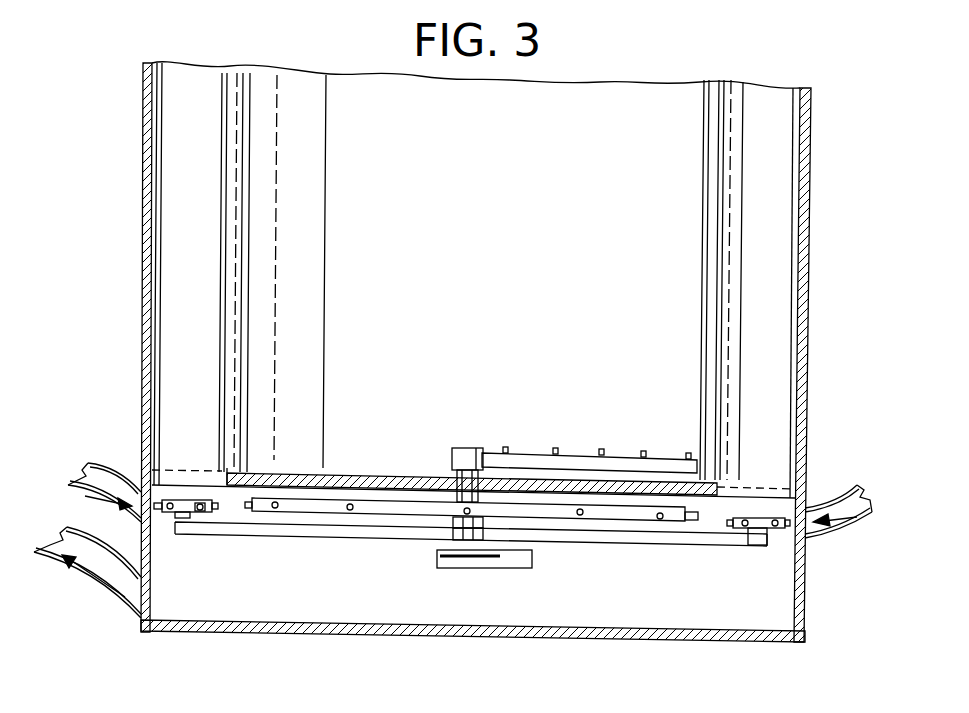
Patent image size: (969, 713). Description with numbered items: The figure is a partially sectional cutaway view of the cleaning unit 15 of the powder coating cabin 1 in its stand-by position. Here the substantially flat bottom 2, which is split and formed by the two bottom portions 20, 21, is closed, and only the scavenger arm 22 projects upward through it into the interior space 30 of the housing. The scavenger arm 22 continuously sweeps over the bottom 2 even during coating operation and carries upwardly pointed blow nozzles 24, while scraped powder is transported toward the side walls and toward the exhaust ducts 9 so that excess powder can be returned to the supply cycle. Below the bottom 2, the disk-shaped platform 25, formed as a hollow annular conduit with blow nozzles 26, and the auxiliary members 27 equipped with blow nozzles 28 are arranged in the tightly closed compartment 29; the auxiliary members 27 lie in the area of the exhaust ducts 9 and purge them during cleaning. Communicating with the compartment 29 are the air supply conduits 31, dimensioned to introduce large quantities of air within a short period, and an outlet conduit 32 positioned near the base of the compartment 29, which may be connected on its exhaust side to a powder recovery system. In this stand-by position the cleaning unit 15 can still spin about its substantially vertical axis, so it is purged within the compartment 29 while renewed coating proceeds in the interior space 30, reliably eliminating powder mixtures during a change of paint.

The powder coating cabin 1 is at (112, 172).
The substantially flat bottom 2 is at (473, 448).
The bottom portion 20 is at (472, 484).
The bottom portion 21 is at (338, 478).
The exhaust duct 9 is at (183, 288).
The cleaning unit 15 is at (536, 519).
The scavenger arm 22 is at (618, 462).
The upwardly pointed blow nozzles 24 is at (505, 449).
The disk-shaped platform 25 is at (397, 510).
The blow nozzles 26 is at (280, 512).
The auxiliary members 27 is at (172, 500).
The blow nozzles 28 is at (216, 514).
The compartment 29 is at (645, 587).
The interior space 30 is at (488, 274).
The air supply conduits 31 is at (75, 500).
The outlet conduit 32 is at (65, 575).